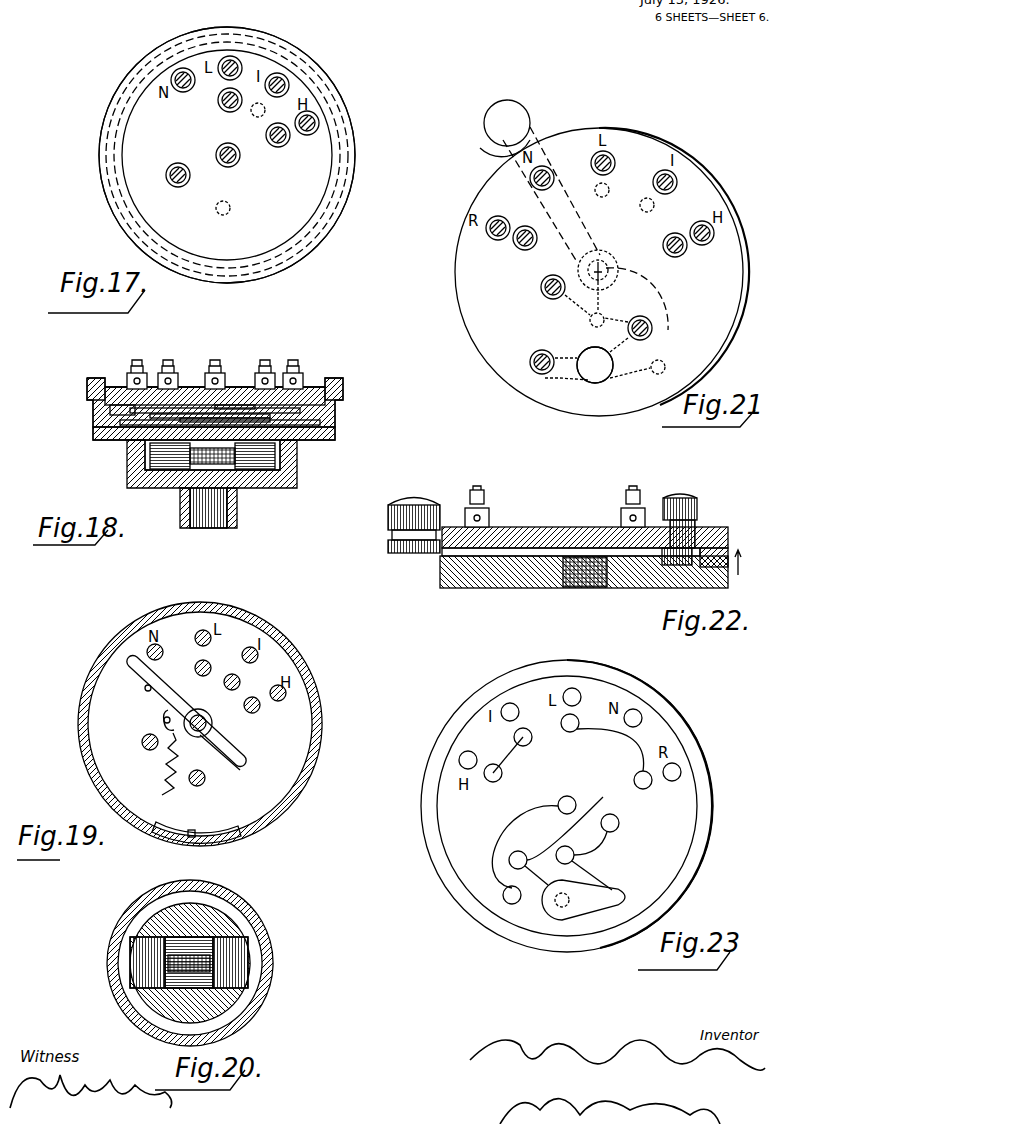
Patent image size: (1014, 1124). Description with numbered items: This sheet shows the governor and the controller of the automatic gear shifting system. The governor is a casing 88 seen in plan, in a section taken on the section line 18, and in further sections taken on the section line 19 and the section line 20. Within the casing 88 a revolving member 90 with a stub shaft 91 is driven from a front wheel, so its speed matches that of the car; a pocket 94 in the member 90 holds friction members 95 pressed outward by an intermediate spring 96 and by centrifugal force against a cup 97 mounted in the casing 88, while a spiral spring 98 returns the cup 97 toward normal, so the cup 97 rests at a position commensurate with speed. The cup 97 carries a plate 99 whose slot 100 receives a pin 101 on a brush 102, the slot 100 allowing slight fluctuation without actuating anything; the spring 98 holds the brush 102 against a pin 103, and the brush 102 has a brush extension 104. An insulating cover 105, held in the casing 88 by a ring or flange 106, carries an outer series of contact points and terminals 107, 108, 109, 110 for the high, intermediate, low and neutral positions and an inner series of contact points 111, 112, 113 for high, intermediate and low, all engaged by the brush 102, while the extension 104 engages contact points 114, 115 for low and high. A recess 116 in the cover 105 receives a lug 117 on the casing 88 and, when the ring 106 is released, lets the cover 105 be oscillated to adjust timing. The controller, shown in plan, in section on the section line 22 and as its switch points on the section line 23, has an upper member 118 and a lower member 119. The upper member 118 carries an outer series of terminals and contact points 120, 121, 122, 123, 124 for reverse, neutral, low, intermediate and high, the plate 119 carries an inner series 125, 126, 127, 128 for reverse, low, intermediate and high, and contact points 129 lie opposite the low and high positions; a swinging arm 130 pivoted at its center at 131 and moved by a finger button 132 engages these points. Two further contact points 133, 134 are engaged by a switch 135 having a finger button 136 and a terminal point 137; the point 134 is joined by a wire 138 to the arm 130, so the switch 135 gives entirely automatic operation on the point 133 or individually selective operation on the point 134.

In FIG. 17, the section line 18 is at (132, 147).
In FIG. 18, the section line 19 is at (95, 415).
In FIG. 18, the section line 20 is at (133, 445).
In FIG. 21, the section line 22 is at (513, 133).
In FIG. 22, the section line 23 is at (442, 523).
In FIG. 18, the casing 88 is at (337, 433).
In FIG. 19, the casing 88 is at (312, 765).
In FIG. 20, the casing 88 is at (262, 932).
In FIG. 18, the revolving member 90 is at (263, 492).
In FIG. 20, the revolving member 90 is at (214, 1000).
In FIG. 18, the stub shaft 91 is at (236, 528).
In FIG. 18, the pocket 94 is at (208, 528).
In FIG. 20, the pocket 94 is at (189, 937).
In FIG. 18, the friction members 95 is at (132, 473).
In FIG. 20, the friction members 95 is at (238, 965).
In FIG. 18, the intermediate spring 96 is at (188, 515).
In FIG. 20, the intermediate spring 96 is at (189, 975).
In FIG. 18, the cup 97 is at (300, 473).
In FIG. 20, the cup 97 is at (270, 988).
In FIG. 18, the spiral spring 98 is at (213, 430).
In FIG. 18, the plate 99 is at (238, 410).
In FIG. 19, the plate 99 is at (163, 712).
In FIG. 19, the slot 100 is at (164, 721).
In FIG. 19, the pin 101 is at (178, 700).
In FIG. 18, the brush 102 is at (188, 418).
In FIG. 19, the brush 102 is at (128, 658).
In FIG. 18, the pin 103 is at (130, 413).
In FIG. 19, the pin 103 is at (145, 688).
In FIG. 19, the brush extension 104 is at (247, 758).
In FIG. 17, the insulating cover 105 is at (238, 168).
In FIG. 18, the insulating cover 105 is at (310, 397).
In FIG. 19, the insulating cover 105 is at (198, 723).
In FIG. 17, the ring or flange 106 is at (377, 53).
In FIG. 18, the ring or flange 106 is at (345, 395).
In FIG. 17, the contact point and terminal 107 is at (318, 117).
In FIG. 19, the contact point and terminal 107 is at (288, 693).
In FIG. 17, the contact point and terminal 108 is at (282, 76).
In FIG. 19, the contact point and terminal 108 is at (256, 650).
In FIG. 17, the contact point and terminal 109 is at (252, 22).
In FIG. 19, the contact point and terminal 109 is at (212, 630).
In FIG. 17, the contact point and terminal 110 is at (184, 68).
In FIG. 19, the contact point and terminal 110 is at (162, 650).
In FIG. 17, the contact point 111 is at (279, 148).
In FIG. 19, the contact point 111 is at (261, 705).
In FIG. 17, the contact point 112 is at (255, 114).
In FIG. 19, the contact point 112 is at (240, 682).
In FIG. 17, the contact point 113 is at (223, 105).
In FIG. 19, the contact point 113 is at (208, 666).
In FIG. 17, the contact point 114 is at (226, 215).
In FIG. 19, the contact point 114 is at (206, 780).
In FIG. 17, the contact point 115 is at (177, 187).
In FIG. 19, the contact point 115 is at (144, 743).
In FIG. 19, the recess 116 is at (228, 812).
In FIG. 19, the lug 117 is at (197, 843).
In FIG. 21, the upper member 118 is at (602, 272).
In FIG. 22, the upper member 118 is at (730, 540).
In FIG. 23, the upper member 118 is at (684, 740).
In FIG. 22, the lower member 119 is at (728, 587).
In FIG. 21, the terminal and contact point 120 is at (499, 218).
In FIG. 23, the terminal and contact point 120 is at (678, 767).
In FIG. 21, the terminal and contact point 121 is at (543, 168).
In FIG. 23, the terminal and contact point 121 is at (638, 711).
In FIG. 21, the terminal and contact point 122 is at (611, 155).
In FIG. 23, the terminal and contact point 122 is at (572, 688).
In FIG. 21, the terminal and contact point 123 is at (675, 177).
In FIG. 23, the terminal and contact point 123 is at (507, 703).
In FIG. 21, the terminal and contact point 124 is at (712, 233).
In FIG. 23, the terminal and contact point 124 is at (462, 754).
In FIG. 21, the terminal and contact point 125 is at (520, 248).
In FIG. 23, the terminal and contact point 125 is at (645, 789).
In FIG. 21, the terminal and contact point 126 is at (602, 197).
In FIG. 23, the terminal and contact point 126 is at (567, 732).
In FIG. 21, the terminal and contact point 127 is at (644, 212).
In FIG. 23, the terminal and contact point 127 is at (514, 737).
In FIG. 21, the terminal and contact point 128 is at (673, 255).
In FIG. 23, the terminal and contact point 128 is at (502, 773).
In FIG. 21, the contact points 129 is at (590, 320).
In FIG. 23, the contact points 129 is at (611, 831).
In FIG. 21, the swinging arm 130 is at (520, 180).
In FIG. 22, the swinging arm 130 is at (527, 552).
In FIG. 22, the pivot 131 is at (581, 577).
In FIG. 22, the finger button 132 is at (405, 502).
In FIG. 21, the contact point 133 is at (538, 350).
In FIG. 23, the contact point 133 is at (610, 897).
In FIG. 21, the contact point 134 is at (662, 360).
In FIG. 23, the contact point 134 is at (506, 903).
In FIG. 21, the switch 135 is at (557, 380).
In FIG. 22, the switch 135 is at (692, 545).
In FIG. 23, the switch 135 is at (593, 905).
In FIG. 21, the finger button 136 is at (592, 377).
In FIG. 22, the finger button 136 is at (687, 500).
In FIG. 21, the terminal point 137 is at (652, 337).
In FIG. 23, the terminal point 137 is at (603, 795).
In FIG. 21, the wire 138 is at (660, 307).
In FIG. 23, the wire 138 is at (558, 805).